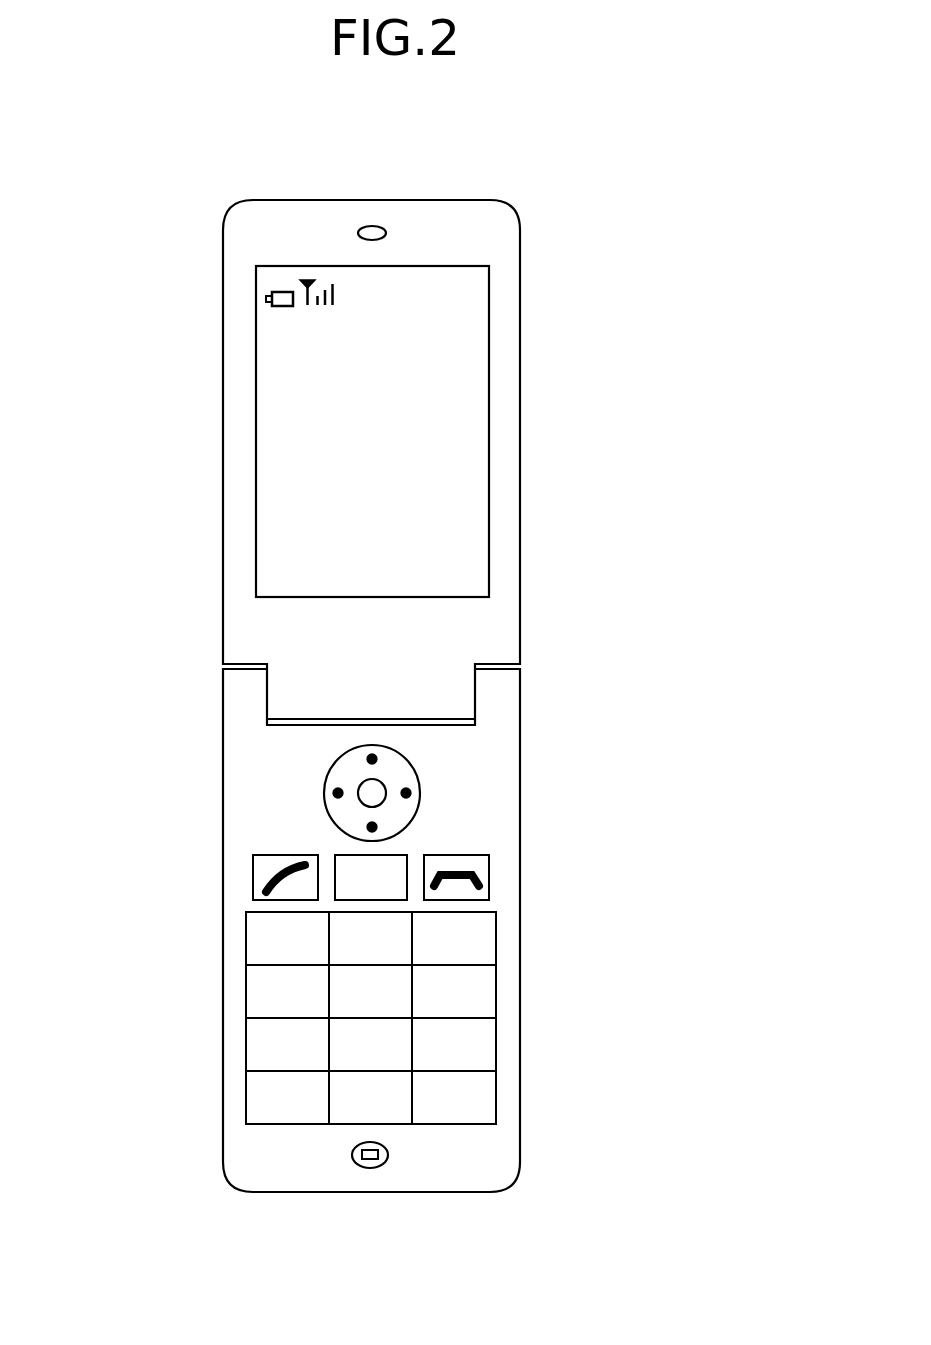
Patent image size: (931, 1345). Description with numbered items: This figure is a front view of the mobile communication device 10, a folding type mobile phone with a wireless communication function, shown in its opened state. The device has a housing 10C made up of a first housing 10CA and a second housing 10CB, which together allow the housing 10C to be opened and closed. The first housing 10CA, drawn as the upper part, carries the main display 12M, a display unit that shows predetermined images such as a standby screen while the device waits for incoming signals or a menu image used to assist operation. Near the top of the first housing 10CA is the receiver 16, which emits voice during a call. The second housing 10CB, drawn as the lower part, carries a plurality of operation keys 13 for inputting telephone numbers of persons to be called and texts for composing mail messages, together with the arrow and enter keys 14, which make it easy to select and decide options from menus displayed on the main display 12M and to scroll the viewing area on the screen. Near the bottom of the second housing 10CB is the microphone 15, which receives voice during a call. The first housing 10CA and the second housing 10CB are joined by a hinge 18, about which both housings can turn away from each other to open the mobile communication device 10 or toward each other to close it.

The mobile communication device 10 is at (543, 172).
The housing 10C is at (118, 612).
The first housing 10CA is at (272, 628).
The second housing 10CB is at (272, 755).
The main display 12M is at (275, 330).
The operation keys 13 is at (497, 851).
The arrow and enter keys 14 is at (420, 773).
The microphone 15 is at (370, 1168).
The receiver 16 is at (372, 226).
The hinge 18 is at (532, 692).